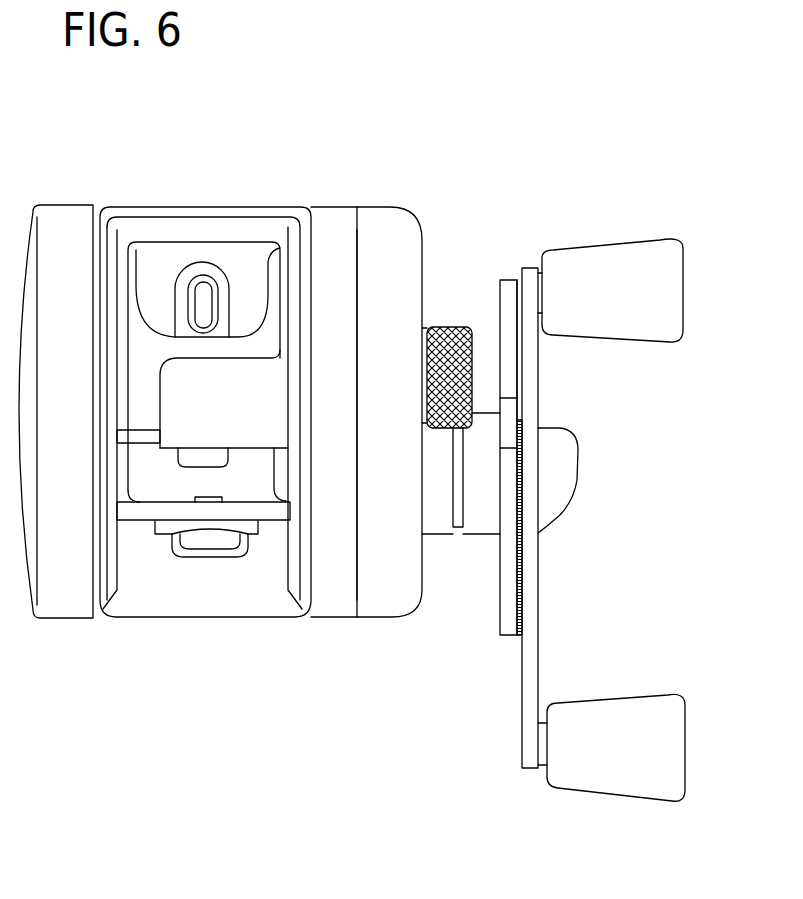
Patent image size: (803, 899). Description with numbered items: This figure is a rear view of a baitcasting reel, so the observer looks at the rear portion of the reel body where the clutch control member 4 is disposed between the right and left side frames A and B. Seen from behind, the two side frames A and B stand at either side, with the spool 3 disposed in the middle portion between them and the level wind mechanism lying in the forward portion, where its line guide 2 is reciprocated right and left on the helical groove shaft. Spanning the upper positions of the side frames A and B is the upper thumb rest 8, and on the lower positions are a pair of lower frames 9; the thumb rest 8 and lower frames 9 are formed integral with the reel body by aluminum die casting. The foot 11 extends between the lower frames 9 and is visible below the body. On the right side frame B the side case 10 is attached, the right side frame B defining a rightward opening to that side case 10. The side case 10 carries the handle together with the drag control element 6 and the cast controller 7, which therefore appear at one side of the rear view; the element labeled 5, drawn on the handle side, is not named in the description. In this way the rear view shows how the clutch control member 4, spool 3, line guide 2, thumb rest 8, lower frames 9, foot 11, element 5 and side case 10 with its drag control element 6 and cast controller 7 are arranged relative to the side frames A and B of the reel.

The left side frame A is at (62, 203).
The right side frame B is at (375, 202).
The line guide 2 is at (205, 265).
The spool 3 is at (142, 300).
The clutch control member 4 is at (252, 368).
The handle arm 5 is at (538, 643).
The drag control element 6 is at (515, 633).
The cast controller 7 is at (450, 327).
The upper thumb rest 8 is at (157, 212).
The lower frames 9 is at (142, 522).
The side case 10 is at (412, 238).
The foot 11 is at (223, 553).